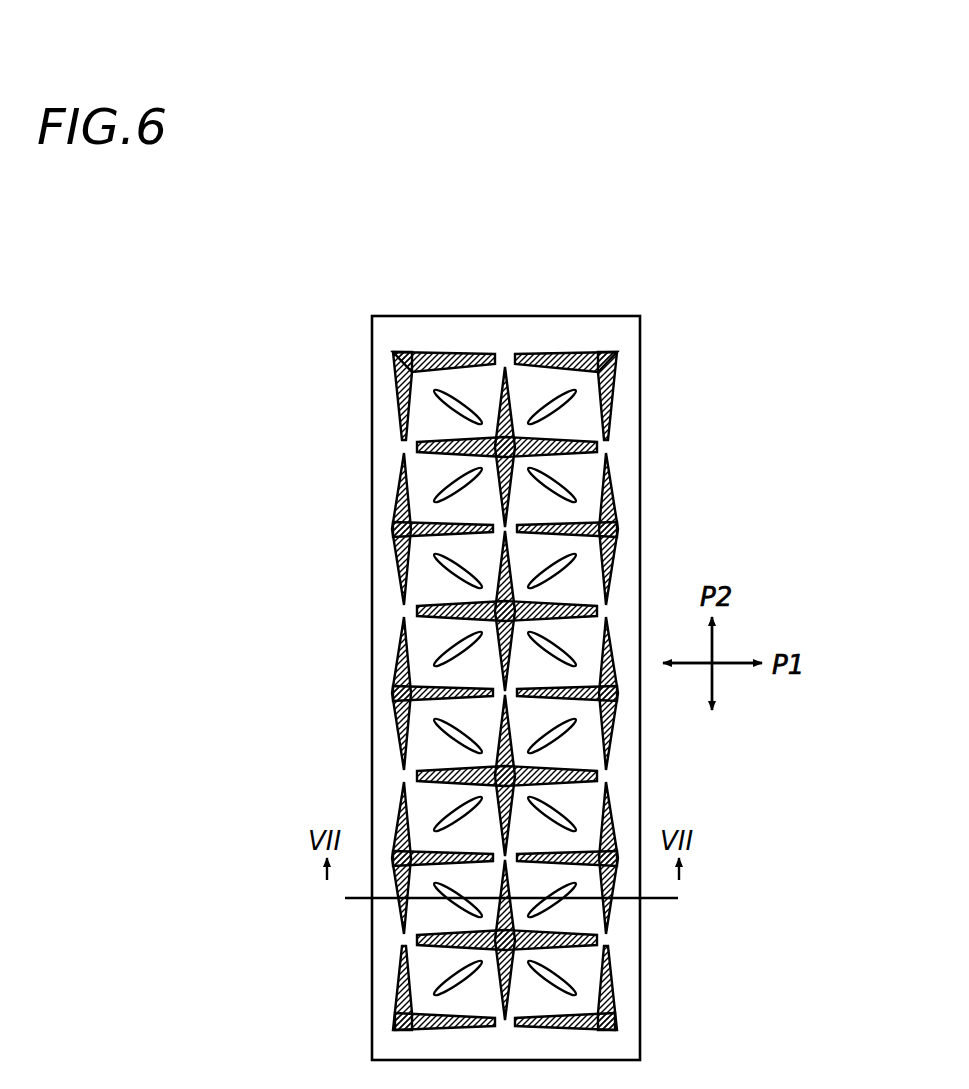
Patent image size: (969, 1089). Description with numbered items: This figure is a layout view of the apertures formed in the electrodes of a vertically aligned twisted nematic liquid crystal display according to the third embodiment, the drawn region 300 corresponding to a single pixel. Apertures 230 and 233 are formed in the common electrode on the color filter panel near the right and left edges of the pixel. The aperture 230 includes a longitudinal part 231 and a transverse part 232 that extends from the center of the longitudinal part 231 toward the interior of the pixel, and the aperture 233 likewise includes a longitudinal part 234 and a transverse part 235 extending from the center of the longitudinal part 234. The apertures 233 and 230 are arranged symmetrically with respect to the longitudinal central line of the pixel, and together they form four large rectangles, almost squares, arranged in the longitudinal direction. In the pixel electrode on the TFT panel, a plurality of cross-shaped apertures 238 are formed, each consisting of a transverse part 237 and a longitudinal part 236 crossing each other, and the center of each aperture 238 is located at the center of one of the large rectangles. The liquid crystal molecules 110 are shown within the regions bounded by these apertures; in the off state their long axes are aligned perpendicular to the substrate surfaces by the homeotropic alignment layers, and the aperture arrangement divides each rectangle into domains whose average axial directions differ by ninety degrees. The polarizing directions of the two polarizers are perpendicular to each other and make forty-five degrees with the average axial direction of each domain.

The pixel region 300 is at (624, 318).
The liquid crystal molecules 110 is at (440, 394).
The aperture 230 is at (694, 691).
The longitudinal part 231 is at (612, 477).
The transverse part 232 is at (612, 521).
The aperture 233 is at (331, 691).
The longitudinal part 234 is at (400, 497).
The transverse part 235 is at (405, 533).
The longitudinal part 236 is at (512, 397).
The transverse part 237 is at (540, 446).
The aperture 238 is at (636, 684).